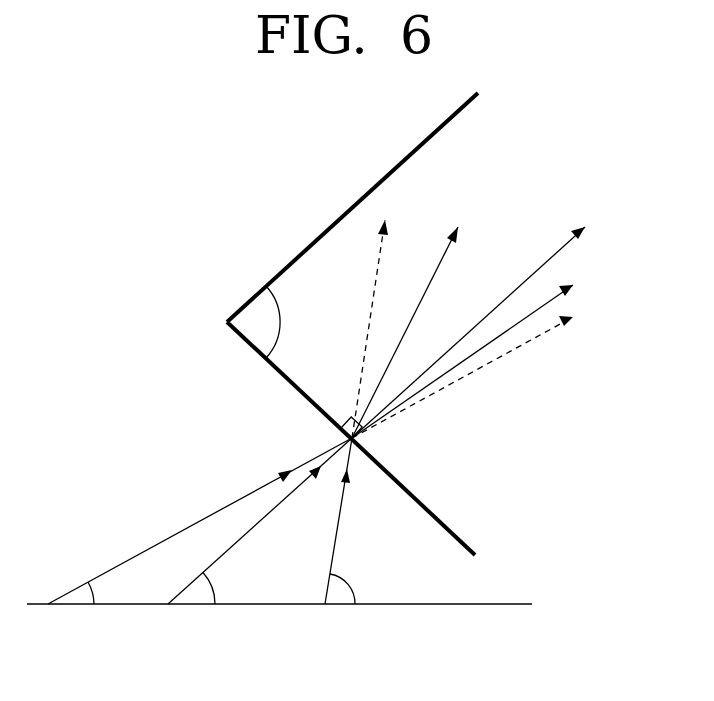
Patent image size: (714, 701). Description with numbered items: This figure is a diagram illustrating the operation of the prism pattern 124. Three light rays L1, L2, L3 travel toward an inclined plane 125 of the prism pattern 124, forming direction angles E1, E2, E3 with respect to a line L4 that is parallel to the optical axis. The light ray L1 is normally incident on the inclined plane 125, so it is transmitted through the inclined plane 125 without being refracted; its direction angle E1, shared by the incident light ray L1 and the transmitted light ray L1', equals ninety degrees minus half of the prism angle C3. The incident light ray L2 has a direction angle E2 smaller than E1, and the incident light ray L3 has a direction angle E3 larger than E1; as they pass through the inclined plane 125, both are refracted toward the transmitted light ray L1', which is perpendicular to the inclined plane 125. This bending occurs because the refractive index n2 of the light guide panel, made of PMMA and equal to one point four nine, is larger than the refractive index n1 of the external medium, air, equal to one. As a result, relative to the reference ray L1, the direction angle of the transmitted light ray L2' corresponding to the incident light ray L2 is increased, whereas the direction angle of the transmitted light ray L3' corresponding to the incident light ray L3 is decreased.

The prism pattern 124 is at (296, 246).
The inclined plane 125 is at (443, 522).
The apex angle of prism pattern C3 is at (293, 322).
The incident light ray L1 is at (260, 521).
The incident light ray L2 is at (200, 521).
The incident light ray L3 is at (348, 521).
The line parallel to the optical axis L4 is at (495, 606).
The transmitted light ray L1' is at (490, 320).
The transmitted light ray L2' is at (486, 355).
The transmitted light ray L3' is at (415, 315).
The direction angle E1 is at (226, 597).
The direction angle E2 is at (103, 599).
The direction angle E3 is at (362, 595).
The refractive index of external medium n1 is at (147, 425).
The refractive index of light guide panel n2 is at (579, 427).